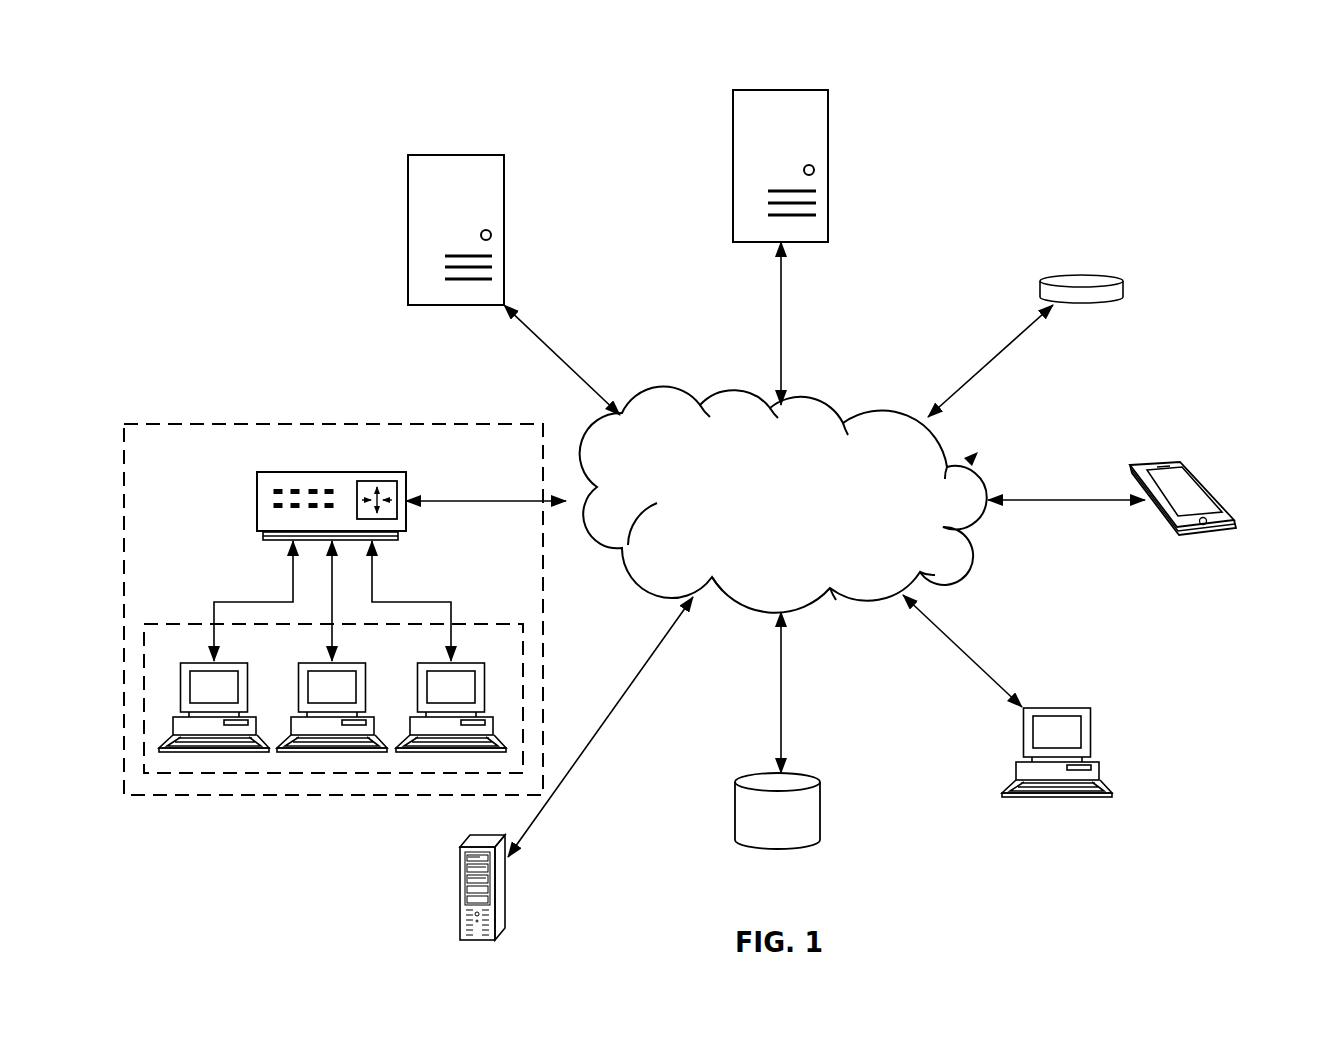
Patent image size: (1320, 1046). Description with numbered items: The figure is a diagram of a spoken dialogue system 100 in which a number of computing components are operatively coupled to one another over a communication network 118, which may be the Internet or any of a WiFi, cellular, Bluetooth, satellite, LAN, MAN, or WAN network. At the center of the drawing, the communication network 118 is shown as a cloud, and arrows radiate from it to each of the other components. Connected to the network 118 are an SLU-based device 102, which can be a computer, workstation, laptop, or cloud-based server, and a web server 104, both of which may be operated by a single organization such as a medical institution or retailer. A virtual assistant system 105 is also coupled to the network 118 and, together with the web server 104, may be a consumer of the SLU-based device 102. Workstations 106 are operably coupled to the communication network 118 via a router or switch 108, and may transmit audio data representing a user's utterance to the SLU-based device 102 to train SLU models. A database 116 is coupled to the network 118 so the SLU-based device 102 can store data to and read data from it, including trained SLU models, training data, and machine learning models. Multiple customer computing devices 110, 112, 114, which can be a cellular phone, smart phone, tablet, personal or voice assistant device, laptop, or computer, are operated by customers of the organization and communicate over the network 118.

The spoken dialogue system 100 is at (1172, 78).
The SLU-based device 102 is at (797, 90).
The web server 104 is at (430, 155).
The virtual assistant system 105 is at (462, 850).
The workstation(s) 106 is at (197, 623).
The router 108 is at (282, 470).
The customer computing device 110 is at (1093, 275).
The customer computing device 112 is at (1206, 493).
The customer computing device 114 is at (1080, 707).
The database 116 is at (805, 782).
The communication network 118 is at (820, 395).